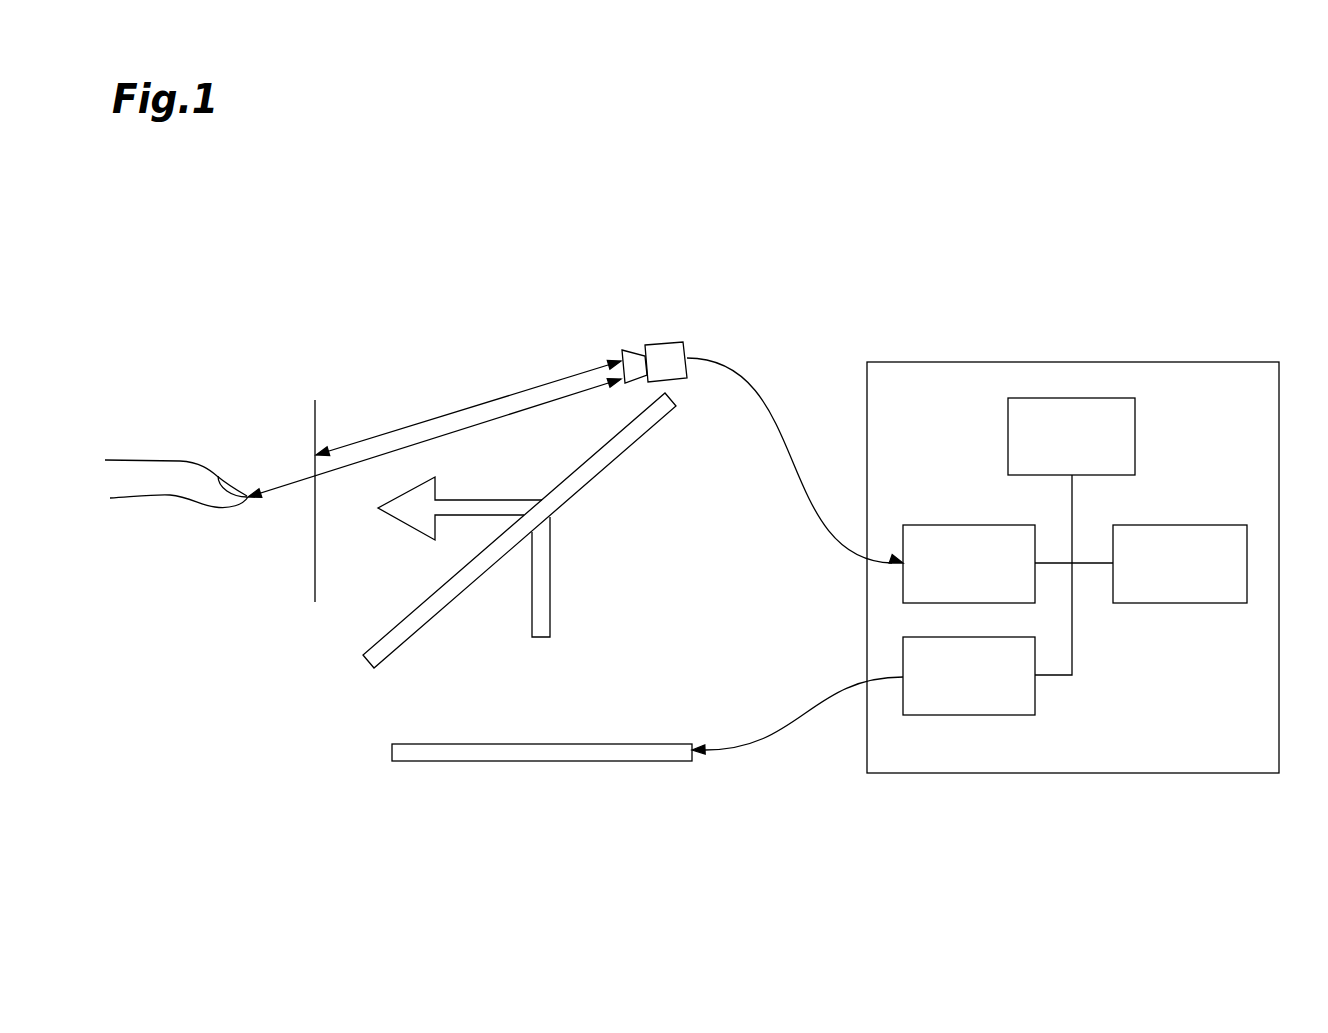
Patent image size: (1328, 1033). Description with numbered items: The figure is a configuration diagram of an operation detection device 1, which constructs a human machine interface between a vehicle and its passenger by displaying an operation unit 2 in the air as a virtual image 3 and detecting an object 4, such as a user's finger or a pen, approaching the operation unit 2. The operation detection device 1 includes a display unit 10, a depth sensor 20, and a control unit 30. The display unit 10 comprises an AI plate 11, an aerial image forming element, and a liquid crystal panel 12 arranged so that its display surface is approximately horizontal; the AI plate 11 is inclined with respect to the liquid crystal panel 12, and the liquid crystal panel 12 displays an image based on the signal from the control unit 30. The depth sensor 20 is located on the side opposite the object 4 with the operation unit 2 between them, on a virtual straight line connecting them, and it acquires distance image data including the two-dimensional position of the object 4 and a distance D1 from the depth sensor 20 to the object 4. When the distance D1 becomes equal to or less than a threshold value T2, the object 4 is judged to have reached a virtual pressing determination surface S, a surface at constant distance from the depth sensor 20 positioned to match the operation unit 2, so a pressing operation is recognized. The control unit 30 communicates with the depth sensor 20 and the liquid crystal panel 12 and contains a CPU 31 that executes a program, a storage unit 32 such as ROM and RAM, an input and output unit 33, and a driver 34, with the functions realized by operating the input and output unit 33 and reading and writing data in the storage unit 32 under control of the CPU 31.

The operation detection device 1 is at (1235, 216).
The operation unit 2 is at (340, 460).
The virtual image 3 is at (316, 420).
The object 4 is at (218, 473).
The pressing determination surface S is at (316, 433).
The threshold value T2 is at (482, 404).
The distance D1 is at (500, 418).
The display unit 10 is at (527, 606).
The AI plate 11 is at (613, 461).
The liquid crystal panel 12 is at (625, 762).
The depth sensor 20 is at (665, 343).
The control unit 30 is at (1058, 362).
The CPU 31 is at (1135, 423).
The storage unit 32 is at (1210, 525).
The input and output unit 33 is at (950, 525).
The driver 34 is at (975, 716).